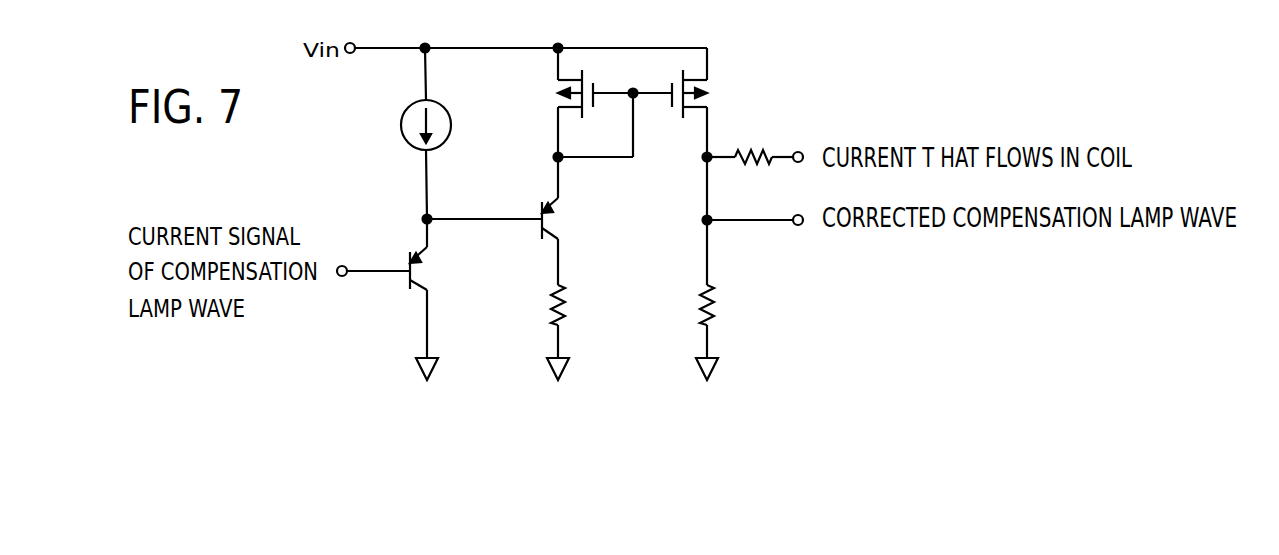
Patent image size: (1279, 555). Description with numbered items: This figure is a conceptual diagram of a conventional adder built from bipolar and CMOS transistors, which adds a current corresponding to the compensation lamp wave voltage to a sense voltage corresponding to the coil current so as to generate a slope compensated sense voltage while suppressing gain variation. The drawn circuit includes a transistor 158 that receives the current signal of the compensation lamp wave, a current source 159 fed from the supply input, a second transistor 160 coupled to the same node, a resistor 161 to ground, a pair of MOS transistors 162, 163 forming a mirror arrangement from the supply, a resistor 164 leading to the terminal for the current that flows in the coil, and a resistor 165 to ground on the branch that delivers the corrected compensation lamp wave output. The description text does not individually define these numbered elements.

The PNP transistor (input) 158 is at (417, 259).
The current source 159 is at (400, 126).
The PNP transistor 160 is at (550, 206).
The resistor 161 is at (567, 311).
The MOS transistor 162 is at (555, 96).
The MOS transistor 163 is at (712, 88).
The resistor 164 is at (757, 152).
The resistor 165 is at (717, 311).